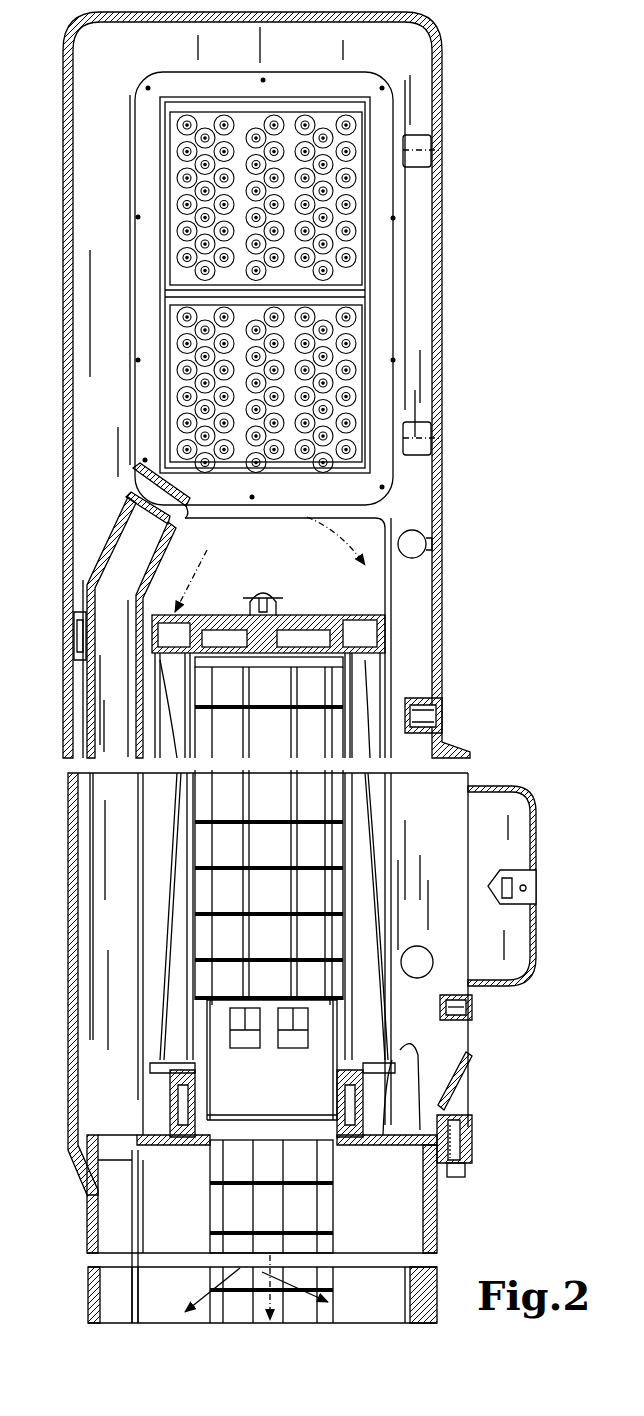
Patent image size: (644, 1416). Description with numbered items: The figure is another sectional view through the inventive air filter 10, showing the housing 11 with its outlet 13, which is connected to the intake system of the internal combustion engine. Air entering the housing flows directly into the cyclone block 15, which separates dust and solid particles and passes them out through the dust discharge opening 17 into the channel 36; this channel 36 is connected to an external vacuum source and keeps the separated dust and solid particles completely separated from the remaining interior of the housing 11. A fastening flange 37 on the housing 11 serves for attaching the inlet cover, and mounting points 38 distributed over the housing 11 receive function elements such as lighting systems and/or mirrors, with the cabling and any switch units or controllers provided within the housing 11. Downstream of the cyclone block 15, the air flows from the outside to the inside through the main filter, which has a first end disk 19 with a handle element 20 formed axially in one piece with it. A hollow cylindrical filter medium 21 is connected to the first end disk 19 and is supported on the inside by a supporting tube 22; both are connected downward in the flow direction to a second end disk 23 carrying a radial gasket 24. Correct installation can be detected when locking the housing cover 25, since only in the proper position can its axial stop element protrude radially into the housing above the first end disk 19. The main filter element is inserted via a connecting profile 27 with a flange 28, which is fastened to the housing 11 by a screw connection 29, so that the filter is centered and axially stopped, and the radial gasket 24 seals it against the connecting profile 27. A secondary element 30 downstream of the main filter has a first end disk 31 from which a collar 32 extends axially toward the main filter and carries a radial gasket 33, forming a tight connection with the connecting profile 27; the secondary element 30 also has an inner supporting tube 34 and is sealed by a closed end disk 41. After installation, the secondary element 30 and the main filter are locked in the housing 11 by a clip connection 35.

The air filter 10 is at (480, 325).
The housing 11 is at (437, 62).
The outlet 13 is at (385, 1318).
The cyclone block 15 is at (368, 192).
The dust discharge opening 17 is at (128, 500).
The first end disk 19 is at (353, 643).
The handle element 20 is at (338, 642).
The hollow cylindrical filter medium 21 is at (386, 659).
The supporting tube 22 is at (330, 712).
The second end disk 23 is at (370, 1053).
The radial gasket 24 is at (398, 1145).
The housing cover 25 is at (400, 506).
The connecting profile 27 is at (390, 1160).
The flange 28 is at (430, 1200).
The screw connection 29 is at (466, 1171).
The secondary element 30 is at (306, 1157).
The first end disk 31 is at (306, 1085).
The collar 32 is at (320, 1002).
The radial gasket 33 is at (212, 1060).
The supporting tube 34 is at (300, 1245).
The clip connection 35 is at (266, 592).
The channel 36 is at (88, 683).
The fastening flange 37 is at (400, 266).
The mounting points 38 is at (430, 150).
The closed end disk 41 is at (305, 1317).